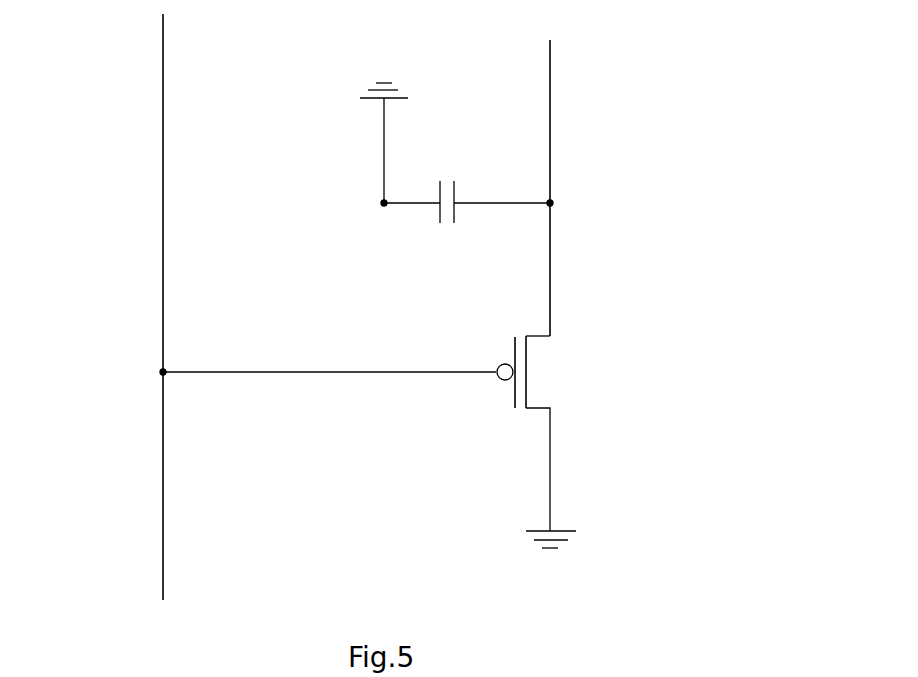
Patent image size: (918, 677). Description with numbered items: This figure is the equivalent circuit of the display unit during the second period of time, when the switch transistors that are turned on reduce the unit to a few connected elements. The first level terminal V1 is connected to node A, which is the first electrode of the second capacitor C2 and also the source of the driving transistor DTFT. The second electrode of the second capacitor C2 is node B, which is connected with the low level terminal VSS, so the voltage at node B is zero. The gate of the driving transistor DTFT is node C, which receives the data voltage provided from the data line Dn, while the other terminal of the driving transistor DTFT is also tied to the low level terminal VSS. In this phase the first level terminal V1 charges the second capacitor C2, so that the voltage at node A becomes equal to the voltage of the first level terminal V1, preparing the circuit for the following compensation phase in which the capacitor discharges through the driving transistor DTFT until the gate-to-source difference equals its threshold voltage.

The data line Dn is at (162, 52).
The first level terminal V1 is at (551, 67).
The low level terminal VSS is at (370, 88).
The node A is at (560, 205).
The node B is at (372, 164).
The node C is at (495, 363).
The second capacitor C2 is at (467, 197).
The driving transistor DTFT is at (561, 433).